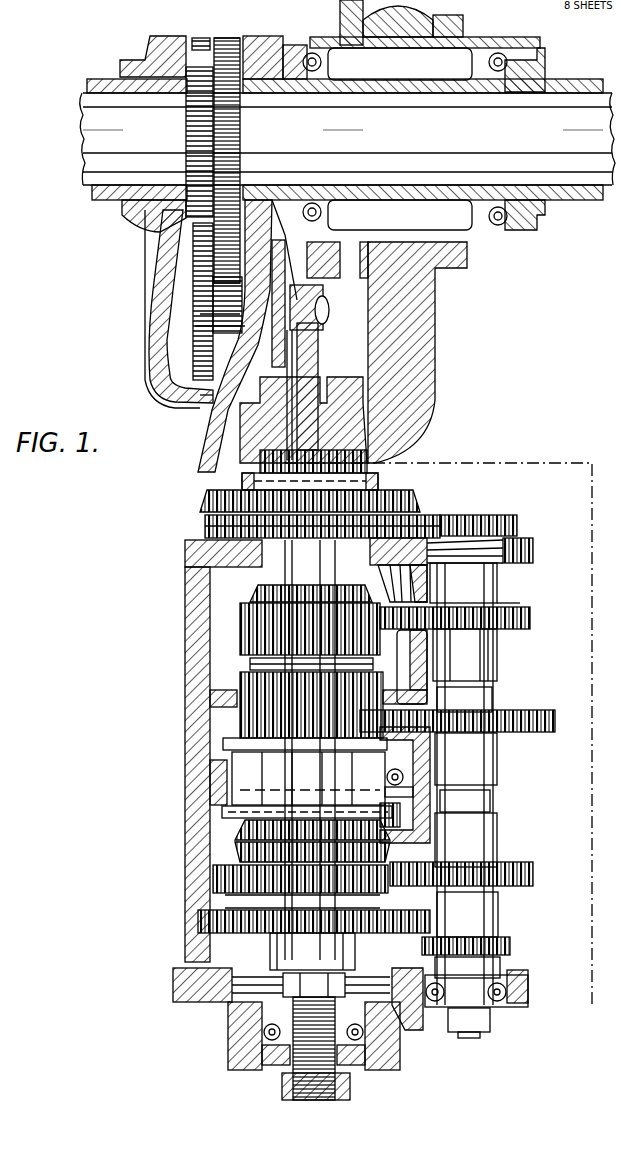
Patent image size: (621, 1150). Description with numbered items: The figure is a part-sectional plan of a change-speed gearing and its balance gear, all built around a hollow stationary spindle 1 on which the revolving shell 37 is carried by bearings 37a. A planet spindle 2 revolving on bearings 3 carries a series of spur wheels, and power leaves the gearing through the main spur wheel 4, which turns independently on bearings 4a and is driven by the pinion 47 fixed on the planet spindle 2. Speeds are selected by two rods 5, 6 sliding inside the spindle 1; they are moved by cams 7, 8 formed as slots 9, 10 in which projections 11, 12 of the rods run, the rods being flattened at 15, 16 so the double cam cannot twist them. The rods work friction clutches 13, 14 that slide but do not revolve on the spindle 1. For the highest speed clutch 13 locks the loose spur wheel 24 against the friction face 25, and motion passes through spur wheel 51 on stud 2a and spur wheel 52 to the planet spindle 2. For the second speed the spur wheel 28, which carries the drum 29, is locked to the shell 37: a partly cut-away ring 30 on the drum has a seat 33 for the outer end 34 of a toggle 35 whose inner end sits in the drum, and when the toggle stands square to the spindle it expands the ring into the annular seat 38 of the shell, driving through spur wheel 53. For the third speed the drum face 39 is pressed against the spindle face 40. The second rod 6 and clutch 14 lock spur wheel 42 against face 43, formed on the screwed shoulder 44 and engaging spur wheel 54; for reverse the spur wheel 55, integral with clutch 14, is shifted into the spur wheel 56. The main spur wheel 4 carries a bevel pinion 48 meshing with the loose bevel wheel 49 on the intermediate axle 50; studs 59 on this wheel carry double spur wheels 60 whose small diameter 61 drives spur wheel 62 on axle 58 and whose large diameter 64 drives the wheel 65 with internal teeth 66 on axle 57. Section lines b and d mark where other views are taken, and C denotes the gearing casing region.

The stationary spindle 1 is at (210, 575).
The planet spindle 2 is at (480, 592).
The stud 2a is at (495, 575).
The bearings 3 is at (505, 1000).
The main spur wheel 4 is at (205, 528).
The bearings 4a is at (206, 518).
The rod 5 is at (300, 420).
The rod 6 is at (310, 445).
The cam 7 is at (300, 300).
The cam 8 is at (330, 270).
The cam slot 9 is at (300, 318).
The cam slot 10 is at (282, 281).
The projection 11 is at (420, 270).
The projection 12 is at (300, 352).
The friction clutch 13 is at (258, 666).
The friction clutch 14 is at (460, 22).
The flat portion 15 is at (300, 40).
The flat portion 16 is at (300, 395).
The spur wheel 24 is at (265, 630).
The friction face 25 is at (250, 600).
The spur wheel 28 is at (270, 712).
The drum 29 is at (222, 810).
The ring 30 is at (255, 780).
The seat 33 is at (404, 778).
The outer end of toggle 34 is at (405, 768).
The toggle 35 is at (413, 792).
The shell 37 is at (285, 560).
The bearings 37a is at (242, 481).
The annular seat 38 is at (210, 770).
The friction face 39 is at (240, 835).
The friction face 40 is at (245, 850).
The spur wheel 42 is at (295, 950).
The friction face 43 is at (240, 920).
The shoulder 44 is at (260, 880).
The pinion 47 is at (518, 523).
The bevel pinion 48 is at (205, 503).
The bevel wheel 49 is at (270, 38).
The intermediate axle 50 is at (100, 148).
The spur wheel 51 is at (430, 640).
The spur wheel 52 is at (532, 618).
The spur wheel 53 is at (540, 712).
The spur wheel 54 is at (537, 875).
The spur wheel 55 is at (497, 915).
The spur wheel 56 is at (443, 190).
The axle 57 is at (92, 192).
The axle 58 is at (538, 200).
The studs 59 is at (210, 300).
The double spur wheel 60 is at (200, 314).
The smallest diameter 61 is at (245, 326).
The spur wheel 62 is at (238, 130).
The largest diameter 64 is at (222, 40).
The wheel with internal teeth 65 is at (160, 40).
The internal teeth 66 is at (200, 395).
The housing C is at (170, 603).
The section line a- b is at (450, 734).
The section line c- d is at (521, 597).